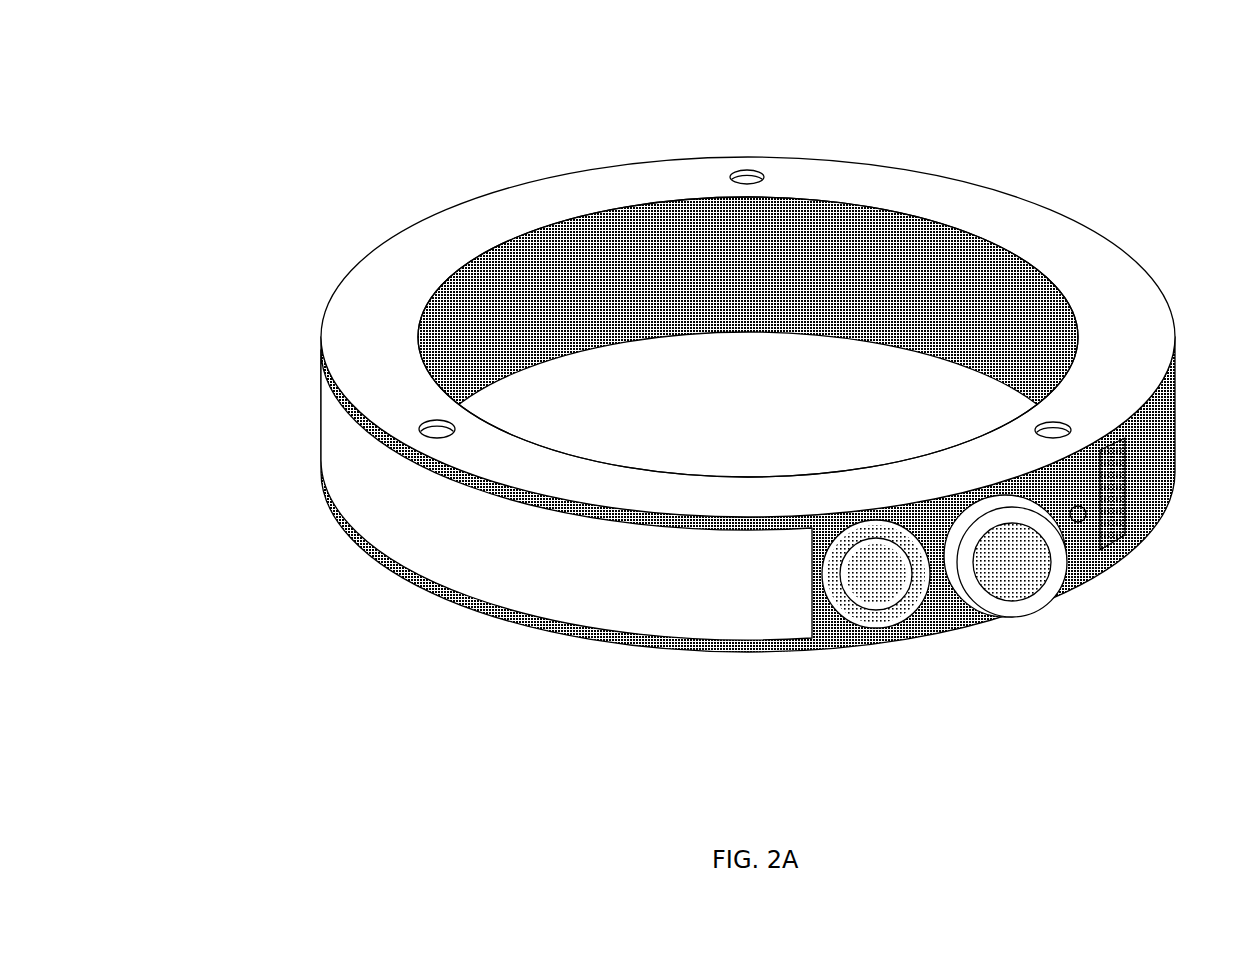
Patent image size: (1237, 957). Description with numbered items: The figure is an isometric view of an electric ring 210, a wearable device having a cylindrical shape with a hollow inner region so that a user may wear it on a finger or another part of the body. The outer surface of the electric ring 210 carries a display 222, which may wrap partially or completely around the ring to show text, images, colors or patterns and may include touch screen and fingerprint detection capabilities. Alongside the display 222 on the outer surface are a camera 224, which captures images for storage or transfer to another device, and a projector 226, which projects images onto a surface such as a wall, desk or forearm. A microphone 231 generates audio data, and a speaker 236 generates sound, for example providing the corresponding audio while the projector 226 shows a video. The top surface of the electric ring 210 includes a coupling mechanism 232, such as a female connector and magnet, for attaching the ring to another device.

The electric ring 210 is at (242, 333).
The display 222 is at (412, 530).
The camera 224 is at (882, 618).
The projector 226 is at (1017, 610).
The microphone 231 is at (1080, 522).
The coupling mechanism 232 is at (747, 177).
The speaker 236 is at (1108, 505).